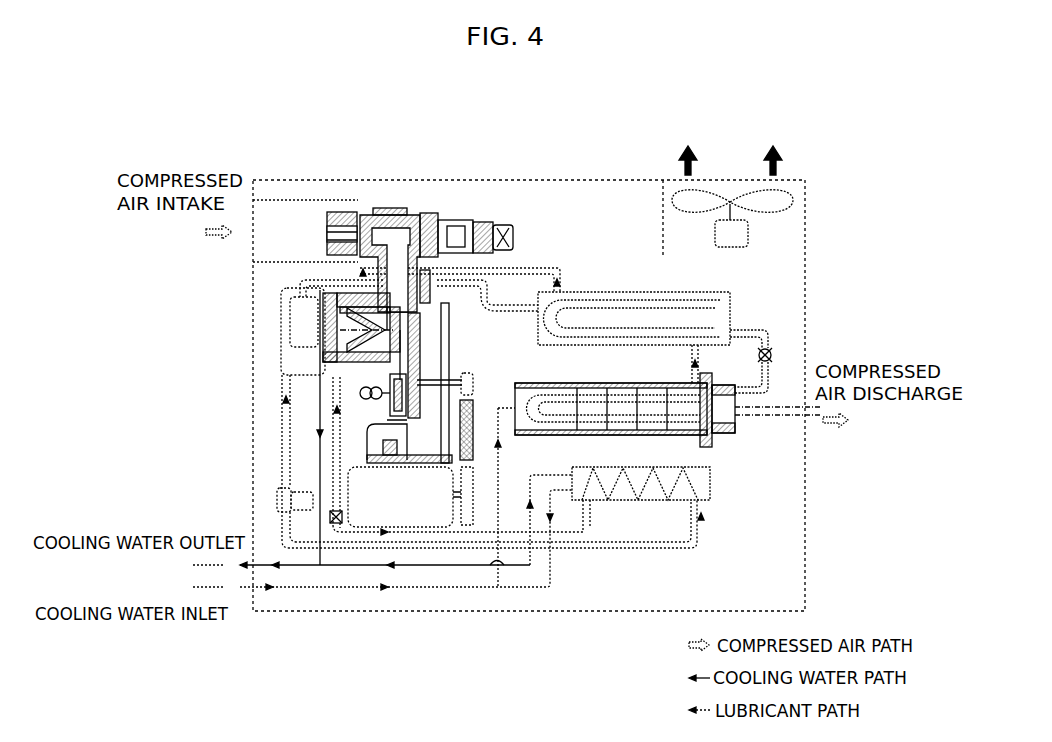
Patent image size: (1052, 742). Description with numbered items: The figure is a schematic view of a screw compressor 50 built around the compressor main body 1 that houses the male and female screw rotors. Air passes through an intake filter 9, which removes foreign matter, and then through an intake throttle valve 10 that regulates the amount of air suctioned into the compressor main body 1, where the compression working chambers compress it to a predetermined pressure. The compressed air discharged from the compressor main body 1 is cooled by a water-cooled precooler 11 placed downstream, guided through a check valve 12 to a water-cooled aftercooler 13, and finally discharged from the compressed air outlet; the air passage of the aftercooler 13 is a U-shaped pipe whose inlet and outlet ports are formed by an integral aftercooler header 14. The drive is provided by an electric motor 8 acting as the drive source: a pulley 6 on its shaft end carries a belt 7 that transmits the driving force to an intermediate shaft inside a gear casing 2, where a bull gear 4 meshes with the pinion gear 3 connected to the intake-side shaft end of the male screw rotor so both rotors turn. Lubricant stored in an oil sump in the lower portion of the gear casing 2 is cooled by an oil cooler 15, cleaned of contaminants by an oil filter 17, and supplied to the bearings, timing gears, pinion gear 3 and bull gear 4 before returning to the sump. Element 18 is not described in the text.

The screw compressor 50 is at (181, 126).
The compressor main body 1 is at (290, 294).
The gear casing 2 is at (387, 408).
The pinion gear 3 is at (416, 270).
The bull gear 4 is at (415, 330).
The pulley 6 is at (470, 515).
The belt 7 is at (503, 228).
The electric motor 8 is at (398, 515).
The intake filter 9 is at (323, 212).
The intake throttle valve 10 is at (383, 213).
The water-cooled precooler 11 is at (620, 292).
The check valve 12 is at (770, 350).
The water-cooled aftercooler 13 is at (613, 383).
The aftercooler header 14 is at (735, 432).
The oil cooler 15 is at (625, 490).
The oil filter 17 is at (303, 507).
The bearing 18 is at (362, 393).